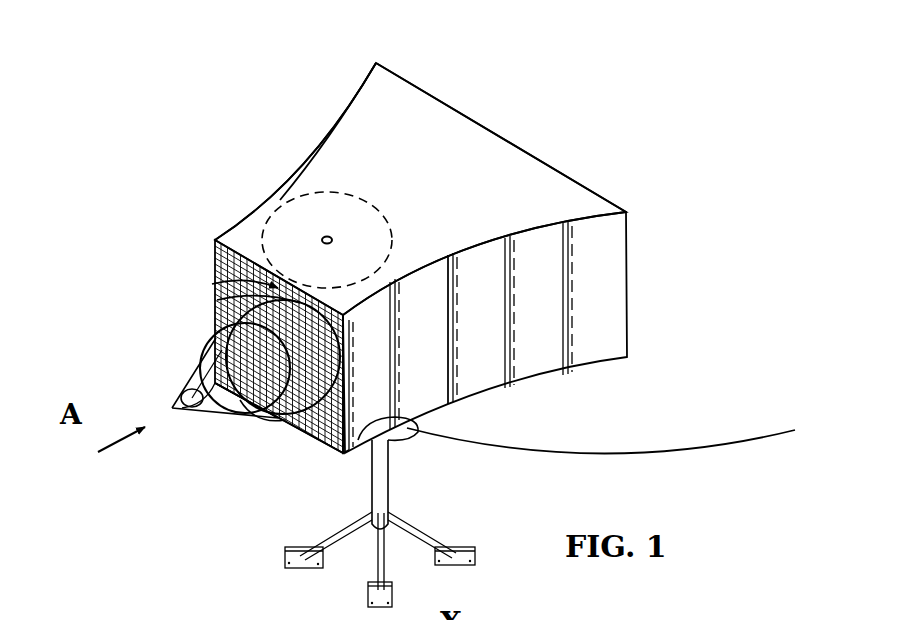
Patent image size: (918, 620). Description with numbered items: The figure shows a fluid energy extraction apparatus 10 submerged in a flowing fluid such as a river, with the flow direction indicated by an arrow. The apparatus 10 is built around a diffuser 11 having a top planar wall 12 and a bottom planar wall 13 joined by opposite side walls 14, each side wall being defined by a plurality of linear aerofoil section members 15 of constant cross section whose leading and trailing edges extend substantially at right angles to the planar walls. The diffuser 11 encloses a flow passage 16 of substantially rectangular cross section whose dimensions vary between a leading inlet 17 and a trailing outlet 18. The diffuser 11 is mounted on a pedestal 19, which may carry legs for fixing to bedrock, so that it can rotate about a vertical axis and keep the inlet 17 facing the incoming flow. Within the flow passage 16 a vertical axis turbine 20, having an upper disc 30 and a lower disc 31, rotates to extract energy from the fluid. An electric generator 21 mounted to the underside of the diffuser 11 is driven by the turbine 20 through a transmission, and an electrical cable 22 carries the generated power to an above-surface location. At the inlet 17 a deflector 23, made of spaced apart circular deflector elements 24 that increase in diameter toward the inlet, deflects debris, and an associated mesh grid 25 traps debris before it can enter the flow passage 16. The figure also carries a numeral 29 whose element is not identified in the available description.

The fluid energy extraction apparatus 10 is at (542, 114).
The diffuser 11 is at (398, 73).
The top planar wall 12 is at (355, 112).
The bottom planar wall 13 is at (310, 440).
The side wall 14 is at (612, 295).
The linear aerofoil section member 15 is at (593, 352).
The flow passage 16 is at (206, 306).
The inlet 17 is at (196, 251).
The outlet 18 is at (478, 108).
The pedestal 19 is at (365, 494).
The turbine 20 is at (278, 305).
The electric generator 21 is at (418, 435).
The electrical cable 22 is at (672, 448).
The deflector 23 is at (199, 422).
The circular deflector element 24 is at (270, 415).
The mesh grid 25 is at (212, 284).
The vent 29 is at (503, 367).
The upper disc 30 is at (284, 200).
The lower disc 31 is at (332, 442).